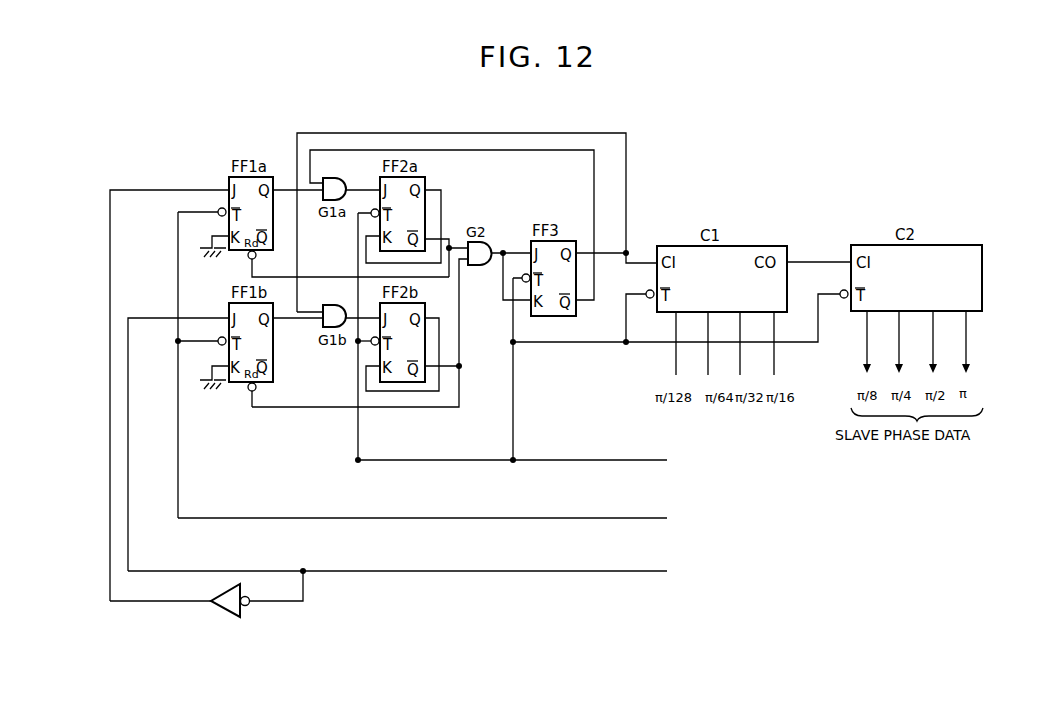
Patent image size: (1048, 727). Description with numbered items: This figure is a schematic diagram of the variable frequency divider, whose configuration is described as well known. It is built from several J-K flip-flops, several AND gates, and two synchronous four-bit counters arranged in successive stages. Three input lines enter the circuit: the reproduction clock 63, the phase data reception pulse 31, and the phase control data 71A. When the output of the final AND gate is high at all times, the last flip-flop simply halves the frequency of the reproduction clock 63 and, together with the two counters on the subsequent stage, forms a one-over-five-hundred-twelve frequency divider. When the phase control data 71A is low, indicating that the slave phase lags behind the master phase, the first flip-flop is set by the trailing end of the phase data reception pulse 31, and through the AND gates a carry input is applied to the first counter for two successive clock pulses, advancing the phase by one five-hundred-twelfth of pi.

The reproduction clock 63 is at (578, 460).
The phase data reception pulse 31 is at (578, 518).
The phase control data 71A is at (578, 571).